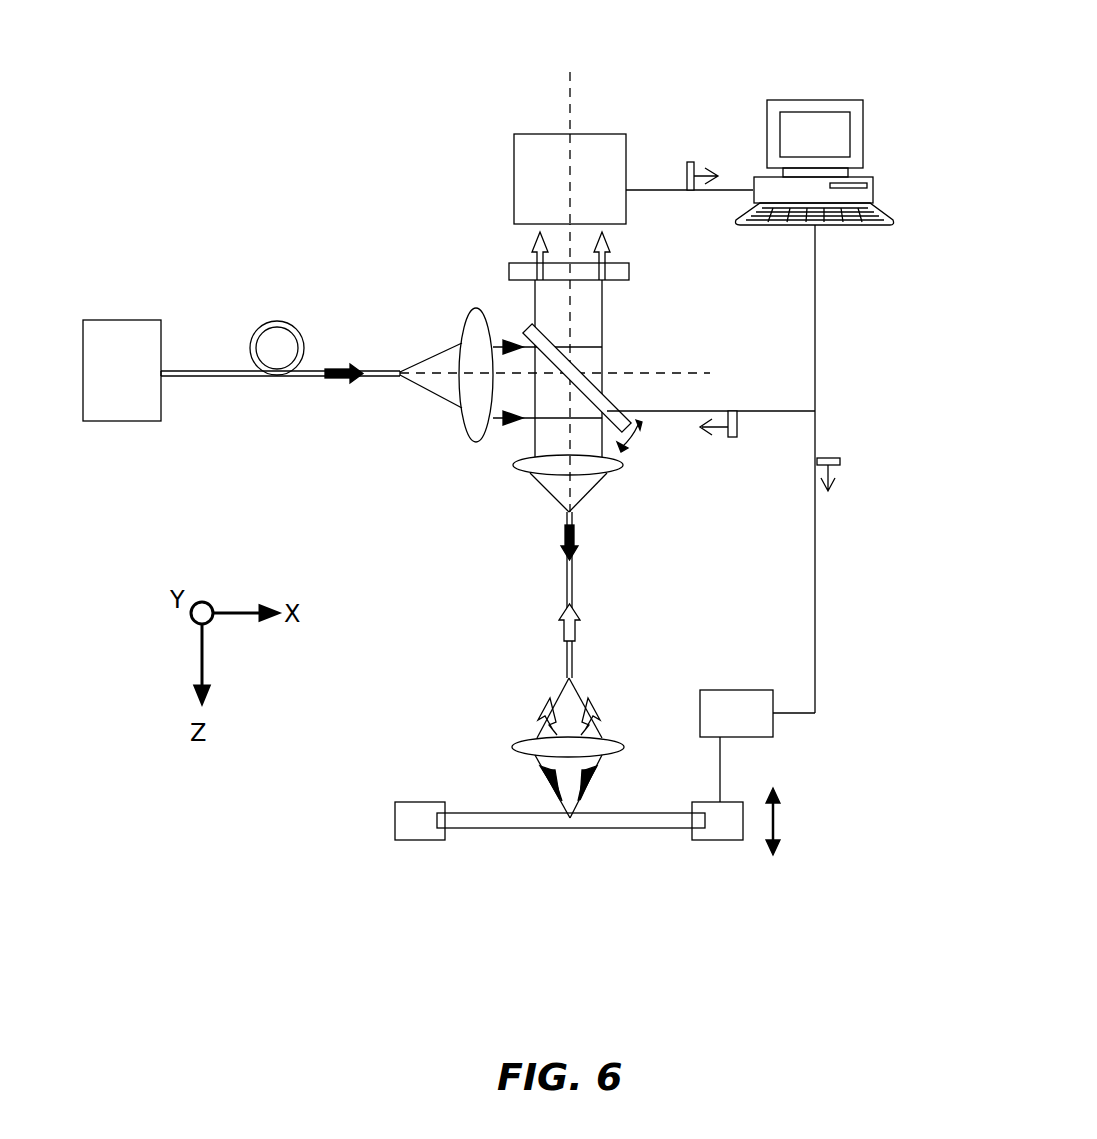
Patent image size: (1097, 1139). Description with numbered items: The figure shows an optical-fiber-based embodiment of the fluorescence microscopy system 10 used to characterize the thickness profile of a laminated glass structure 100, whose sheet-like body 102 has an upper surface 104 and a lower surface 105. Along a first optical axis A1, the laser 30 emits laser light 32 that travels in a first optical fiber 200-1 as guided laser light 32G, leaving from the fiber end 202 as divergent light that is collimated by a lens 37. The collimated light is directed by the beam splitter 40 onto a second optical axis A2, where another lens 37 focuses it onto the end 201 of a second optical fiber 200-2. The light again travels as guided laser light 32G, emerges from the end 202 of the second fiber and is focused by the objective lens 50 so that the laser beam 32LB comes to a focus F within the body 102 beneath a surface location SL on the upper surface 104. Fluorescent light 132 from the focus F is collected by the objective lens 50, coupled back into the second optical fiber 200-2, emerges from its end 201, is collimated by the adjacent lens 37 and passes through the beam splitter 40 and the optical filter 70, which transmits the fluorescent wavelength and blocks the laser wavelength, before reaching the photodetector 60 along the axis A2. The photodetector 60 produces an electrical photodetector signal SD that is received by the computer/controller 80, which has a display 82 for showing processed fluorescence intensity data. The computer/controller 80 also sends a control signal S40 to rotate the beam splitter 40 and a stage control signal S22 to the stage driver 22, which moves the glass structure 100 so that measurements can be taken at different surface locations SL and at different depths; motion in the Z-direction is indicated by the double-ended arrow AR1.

The fluorescence microscopy system 10 is at (382, 150).
The laser 30 is at (122, 370).
The optical fiber end 201 is at (163, 372).
The optical fiber end 202 is at (399, 372).
The first optical fiber 200-1 is at (212, 380).
The second optical fiber 200-2 is at (620, 688).
The guided laser light 32G is at (341, 380).
The laser light 32 is at (455, 325).
The lens 37 is at (476, 312).
The beam splitter 40 is at (560, 320).
The optical filter 70 is at (632, 273).
The fluorescent light 132 is at (530, 244).
The photodetector 60 is at (570, 179).
The computer/controller 80 is at (840, 136).
The display 82 is at (818, 122).
The stage driver 22 is at (757, 746).
The objective lens 50 is at (522, 740).
The laser beam 32LB is at (588, 780).
The laminated glass structure 100 is at (553, 840).
The body 102 is at (611, 822).
The upper surface 104 is at (690, 905).
The lower surface 105 is at (717, 916).
The focus F is at (567, 828).
The surface location SL is at (568, 818).
The double-ended arrow AR1 is at (790, 848).
The first optical axis A1 is at (706, 372).
The second optical axis A2 is at (572, 108).
The photodetector signal SD is at (698, 164).
The stage control signal S22 is at (832, 458).
The control signal S40 is at (745, 428).